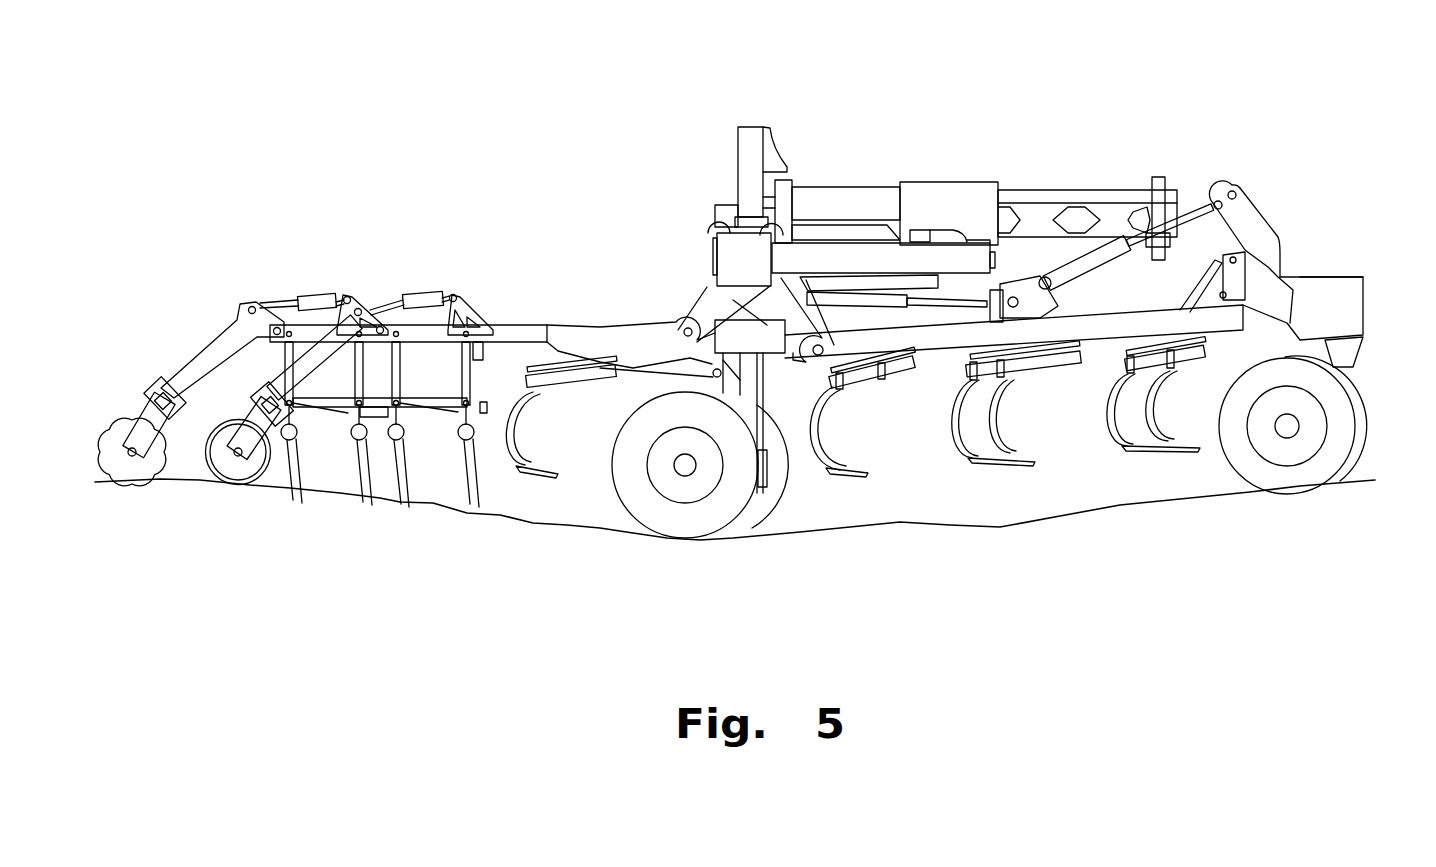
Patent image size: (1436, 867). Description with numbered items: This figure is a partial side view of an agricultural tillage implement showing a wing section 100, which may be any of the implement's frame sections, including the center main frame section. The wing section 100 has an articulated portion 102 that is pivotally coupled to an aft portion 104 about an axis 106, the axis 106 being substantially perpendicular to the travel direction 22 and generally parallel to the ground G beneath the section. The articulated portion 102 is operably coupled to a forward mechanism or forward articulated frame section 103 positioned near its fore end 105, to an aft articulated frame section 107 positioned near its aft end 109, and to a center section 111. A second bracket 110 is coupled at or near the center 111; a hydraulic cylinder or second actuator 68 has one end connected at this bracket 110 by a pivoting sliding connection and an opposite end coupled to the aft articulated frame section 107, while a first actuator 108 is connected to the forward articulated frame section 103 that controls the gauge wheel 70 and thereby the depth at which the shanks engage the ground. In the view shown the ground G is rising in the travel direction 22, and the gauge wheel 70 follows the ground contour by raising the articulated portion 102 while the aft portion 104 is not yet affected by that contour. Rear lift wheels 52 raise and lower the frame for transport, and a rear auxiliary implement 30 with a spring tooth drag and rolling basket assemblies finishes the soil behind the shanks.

The wing section 100 is at (937, 134).
The travel direction 22 is at (1323, 120).
The rear auxiliary implement 30 is at (258, 275).
The aft portion 104 is at (447, 242).
The aft end 109 is at (720, 203).
The aft articulated frame section 107 is at (755, 265).
The hydraulic cylinder 68 is at (872, 293).
The second bracket 110 is at (1030, 262).
The first actuator 108 is at (1100, 263).
The forward articulated frame section 103 is at (1230, 220).
The articulated portion 102 is at (1296, 214).
The fore end 105 is at (1322, 300).
The axis 106 is at (857, 373).
The center section 111 is at (1050, 337).
The rear lift wheels 52 is at (612, 445).
The gauge wheel assemblies 70 is at (1230, 470).
The ground G is at (1001, 521).